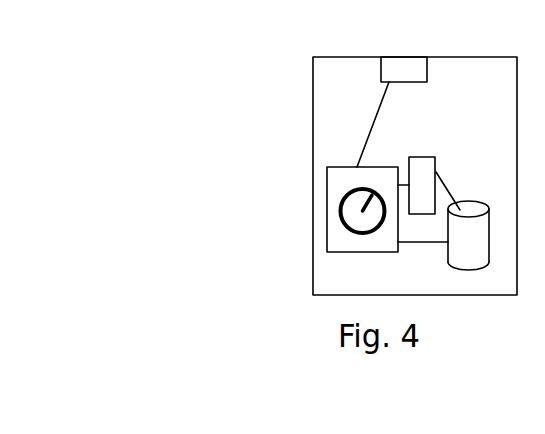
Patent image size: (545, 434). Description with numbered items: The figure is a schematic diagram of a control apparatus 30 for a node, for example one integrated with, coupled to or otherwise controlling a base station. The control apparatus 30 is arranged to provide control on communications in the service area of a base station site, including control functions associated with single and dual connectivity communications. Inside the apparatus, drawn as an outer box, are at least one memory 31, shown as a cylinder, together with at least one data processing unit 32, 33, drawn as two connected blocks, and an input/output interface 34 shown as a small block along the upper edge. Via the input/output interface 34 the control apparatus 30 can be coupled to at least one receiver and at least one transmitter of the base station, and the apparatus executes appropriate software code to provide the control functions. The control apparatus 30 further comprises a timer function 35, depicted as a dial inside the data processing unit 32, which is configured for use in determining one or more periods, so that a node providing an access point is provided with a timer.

The control apparatus 30 is at (299, 52).
The memory 31 is at (470, 260).
The data processing unit 32 is at (327, 227).
The data processing unit 33 is at (417, 172).
The input/output interface 34 is at (410, 73).
The timer function 35 is at (338, 200).